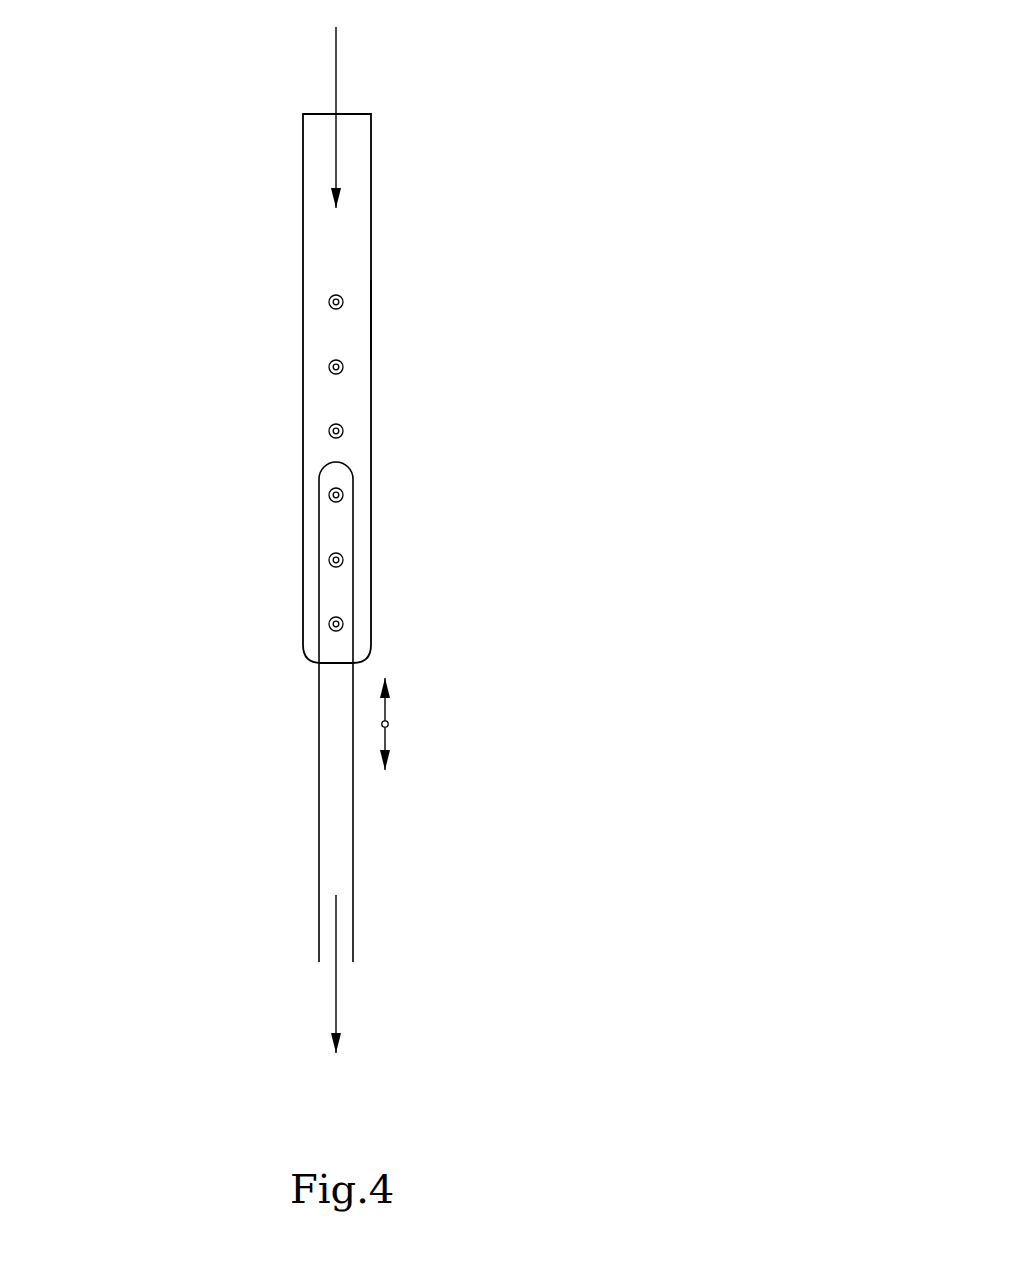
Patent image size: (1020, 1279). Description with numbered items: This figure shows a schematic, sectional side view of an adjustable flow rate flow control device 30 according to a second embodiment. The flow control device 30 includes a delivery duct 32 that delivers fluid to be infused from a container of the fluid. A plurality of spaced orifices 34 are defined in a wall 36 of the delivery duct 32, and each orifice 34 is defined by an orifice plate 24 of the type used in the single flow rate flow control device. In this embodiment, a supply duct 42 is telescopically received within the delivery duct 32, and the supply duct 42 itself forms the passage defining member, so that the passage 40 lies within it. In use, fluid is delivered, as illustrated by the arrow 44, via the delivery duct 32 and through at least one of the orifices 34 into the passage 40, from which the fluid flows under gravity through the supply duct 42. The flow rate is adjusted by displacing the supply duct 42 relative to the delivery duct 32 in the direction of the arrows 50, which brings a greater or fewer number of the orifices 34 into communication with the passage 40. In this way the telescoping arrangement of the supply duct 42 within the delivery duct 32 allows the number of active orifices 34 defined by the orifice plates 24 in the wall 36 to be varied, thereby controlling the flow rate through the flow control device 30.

The flow control device 30 is at (678, 131).
The delivery duct 32 is at (371, 260).
The orifices 34 is at (329, 368).
The wall 36 is at (357, 327).
The orifice plate 24 is at (335, 373).
The passage 40 is at (344, 818).
The supply duct 42 is at (319, 853).
The arrow 44 is at (336, 67).
The arrows 50 is at (388, 722).